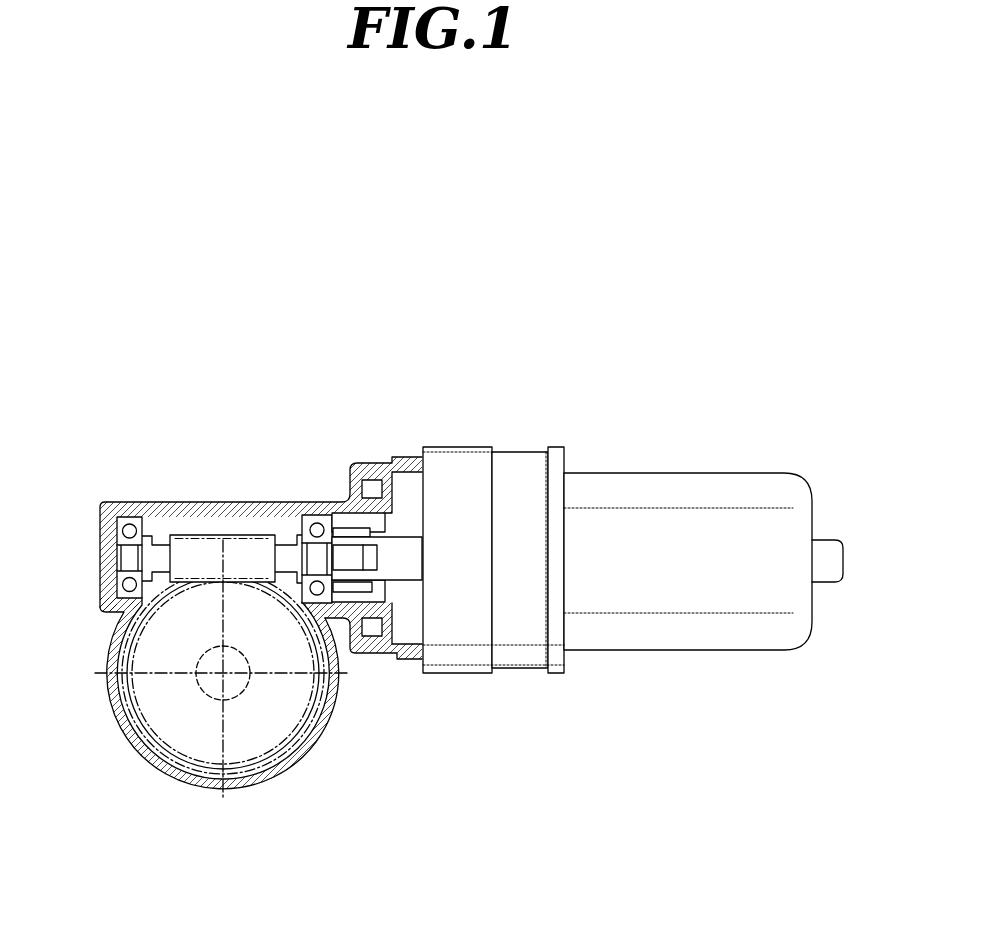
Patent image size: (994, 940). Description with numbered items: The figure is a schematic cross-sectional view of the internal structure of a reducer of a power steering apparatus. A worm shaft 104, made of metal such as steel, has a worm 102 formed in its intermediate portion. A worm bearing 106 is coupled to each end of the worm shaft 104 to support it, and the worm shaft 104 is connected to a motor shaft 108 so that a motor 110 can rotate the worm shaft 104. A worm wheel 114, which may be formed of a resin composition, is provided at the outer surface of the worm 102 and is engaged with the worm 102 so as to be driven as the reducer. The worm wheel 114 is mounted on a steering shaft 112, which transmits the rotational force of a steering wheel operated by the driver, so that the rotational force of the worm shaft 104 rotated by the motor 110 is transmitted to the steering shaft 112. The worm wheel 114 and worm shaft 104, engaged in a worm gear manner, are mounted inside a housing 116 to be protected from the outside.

The worm 102 is at (208, 532).
The worm shaft 104 is at (162, 540).
The worm bearing 106 is at (128, 520).
The motor shaft 108 is at (406, 547).
The motor 110 is at (610, 488).
The steering shaft 112 is at (245, 688).
The worm wheel 114 is at (328, 695).
The housing 116 is at (108, 555).